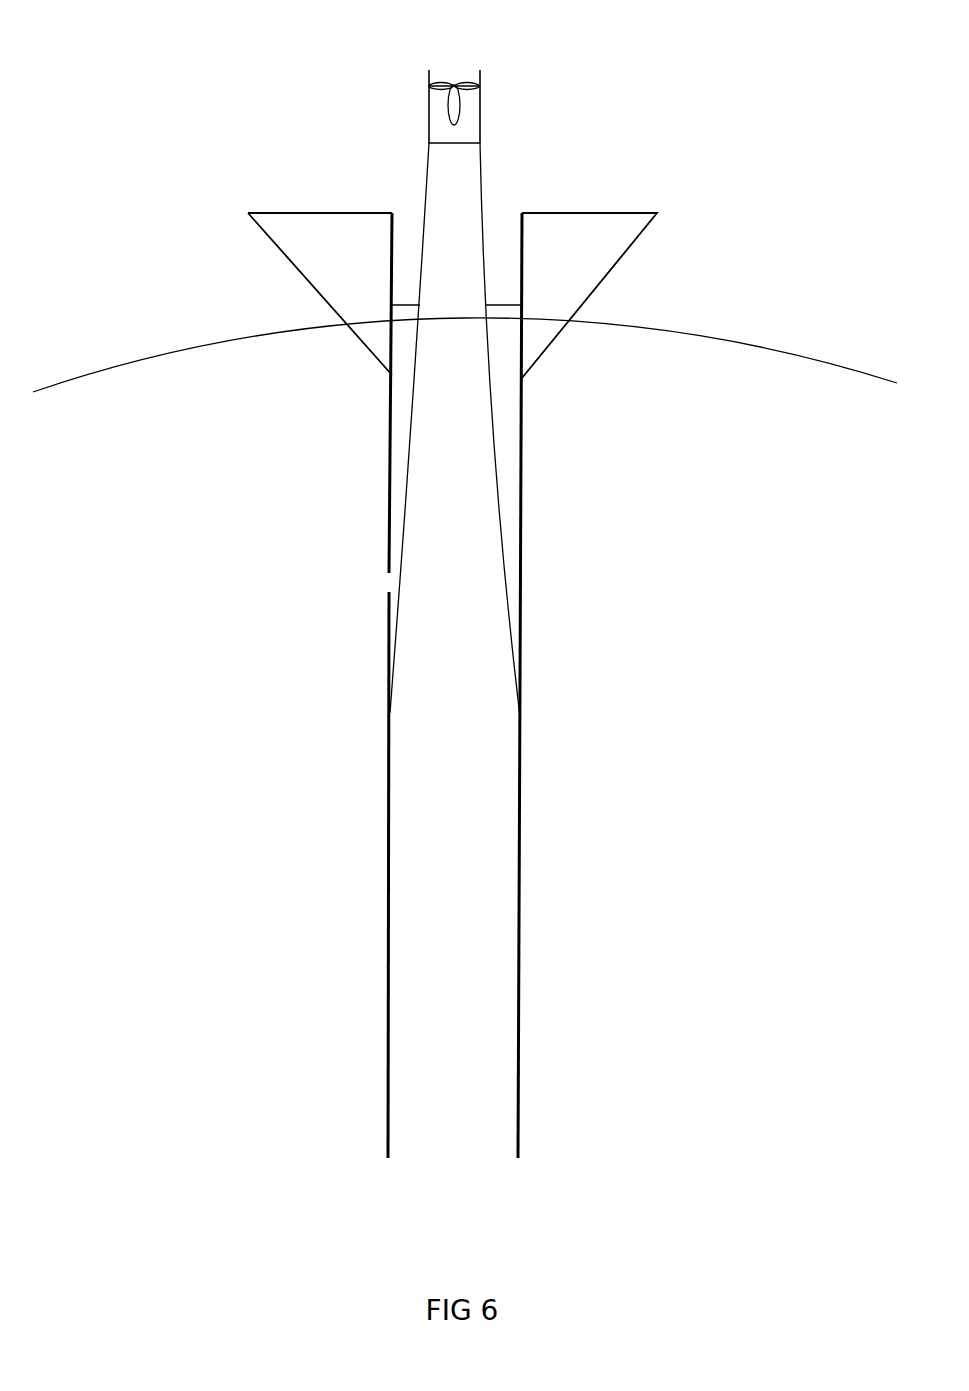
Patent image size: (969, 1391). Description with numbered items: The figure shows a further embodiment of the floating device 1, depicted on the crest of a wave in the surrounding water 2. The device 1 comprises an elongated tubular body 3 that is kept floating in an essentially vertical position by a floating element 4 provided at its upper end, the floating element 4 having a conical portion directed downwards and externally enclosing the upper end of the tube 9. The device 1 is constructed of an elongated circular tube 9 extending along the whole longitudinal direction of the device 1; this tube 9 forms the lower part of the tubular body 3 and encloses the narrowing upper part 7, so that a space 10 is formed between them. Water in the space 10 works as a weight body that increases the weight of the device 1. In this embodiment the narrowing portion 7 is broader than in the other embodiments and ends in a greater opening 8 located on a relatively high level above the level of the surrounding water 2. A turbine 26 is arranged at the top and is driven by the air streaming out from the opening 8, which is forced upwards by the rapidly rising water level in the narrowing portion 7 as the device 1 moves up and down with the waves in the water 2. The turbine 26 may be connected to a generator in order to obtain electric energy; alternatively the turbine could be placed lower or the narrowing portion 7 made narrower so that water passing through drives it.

The device 1 is at (172, 179).
The water 2 is at (198, 422).
The tubular body 3 is at (488, 745).
The floating element 4 is at (590, 232).
The upper part 7 is at (495, 468).
The opening 8 is at (460, 69).
The tube 9 is at (390, 517).
The space 10 is at (403, 398).
The turbine 26 is at (429, 84).